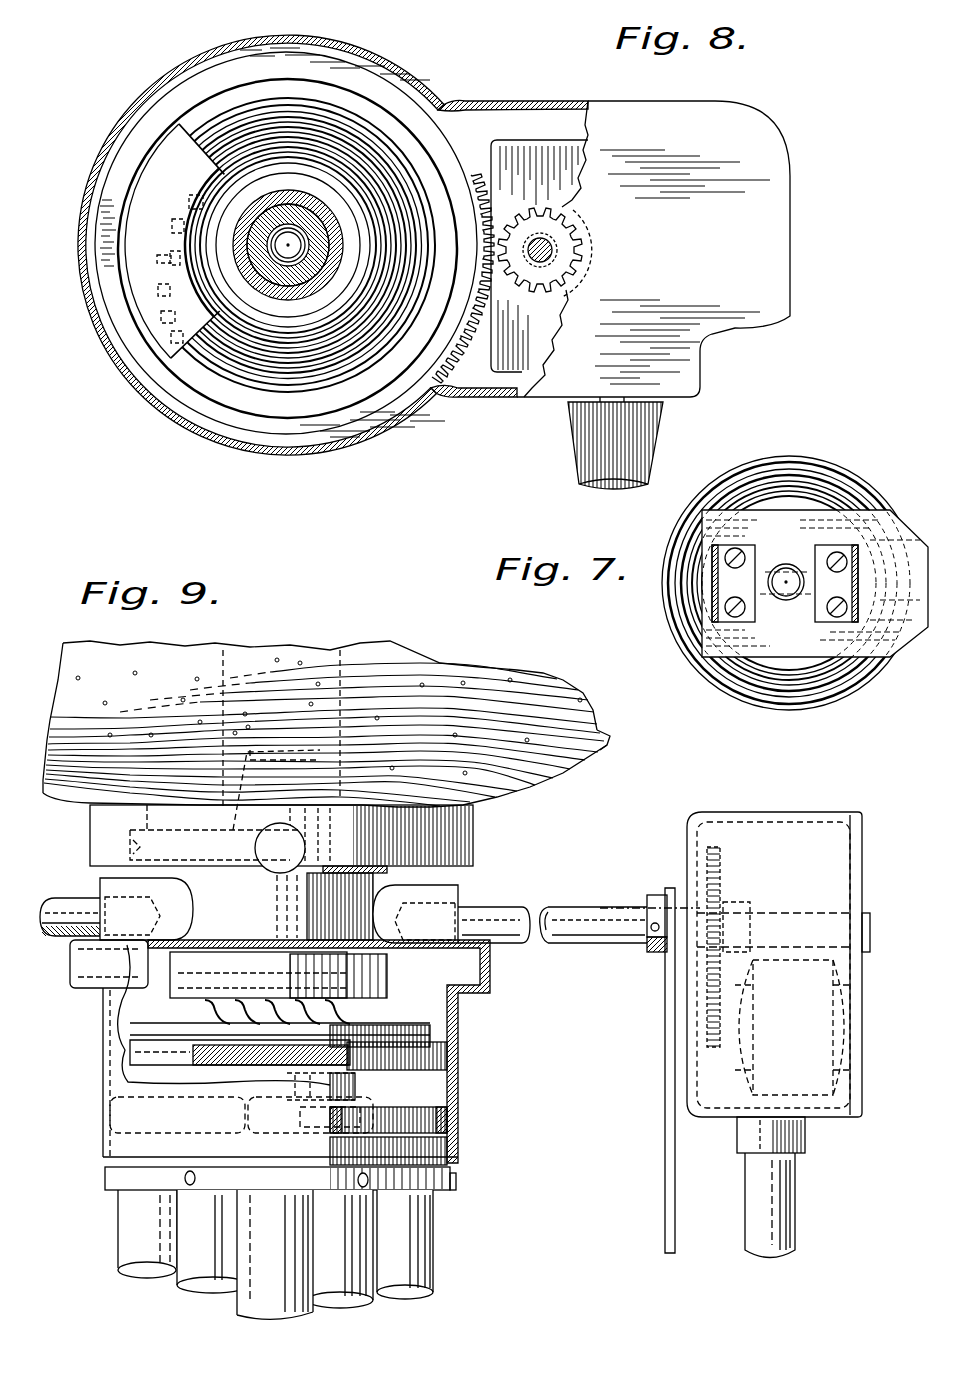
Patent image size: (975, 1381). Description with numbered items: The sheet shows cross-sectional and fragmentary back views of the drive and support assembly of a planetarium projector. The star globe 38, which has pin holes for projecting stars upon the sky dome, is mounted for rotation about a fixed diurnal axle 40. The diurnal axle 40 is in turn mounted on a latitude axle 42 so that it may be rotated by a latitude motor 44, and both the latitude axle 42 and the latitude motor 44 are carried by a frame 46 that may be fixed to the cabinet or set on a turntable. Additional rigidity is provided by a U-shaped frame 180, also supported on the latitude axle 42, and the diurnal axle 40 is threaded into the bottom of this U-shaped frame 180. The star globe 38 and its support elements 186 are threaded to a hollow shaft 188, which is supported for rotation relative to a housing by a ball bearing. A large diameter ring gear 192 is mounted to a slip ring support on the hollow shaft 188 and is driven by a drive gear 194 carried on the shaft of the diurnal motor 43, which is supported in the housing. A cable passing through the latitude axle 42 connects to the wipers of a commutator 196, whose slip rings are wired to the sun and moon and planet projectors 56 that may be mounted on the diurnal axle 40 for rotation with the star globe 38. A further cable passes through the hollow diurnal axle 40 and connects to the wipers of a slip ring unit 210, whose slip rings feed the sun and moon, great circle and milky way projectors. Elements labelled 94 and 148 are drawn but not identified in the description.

In FIG. 9, the star globe 38 is at (588, 757).
In FIG. 8, the diurnal axle 40 is at (302, 262).
In FIG. 7, the diurnal axle 40 is at (787, 598).
In FIG. 9, the latitude axle 42 is at (70, 893).
In FIG. 8, the diurnal motor 43 is at (510, 355).
In FIG. 9, the diurnal motor 43 is at (822, 812).
In FIG. 9, the latitude motor 44 is at (840, 983).
In FIG. 9, the frame 46 is at (793, 1210).
In FIG. 9, the sun and moon and planet projectors 56 is at (445, 1258).
In FIG. 8, the pinion gear 94 is at (547, 205).
In FIG. 8, the cover 148 is at (775, 299).
In FIG. 9, the U-shaped frame 180 is at (660, 1217).
In FIG. 9, the support elements 186 is at (383, 635).
In FIG. 8, the hollow shaft 188 is at (297, 203).
In FIG. 8, the ring gear 192 is at (468, 382).
In FIG. 9, the ring gear 192 is at (487, 973).
In FIG. 8, the drive gear 194 is at (285, 380).
In FIG. 9, the drive gear 194 is at (405, 1027).
In FIG. 8, the commutator 196 is at (180, 222).
In FIG. 9, the commutator 196 is at (293, 1000).
In FIG. 7, the slip ring unit 210 is at (904, 501).